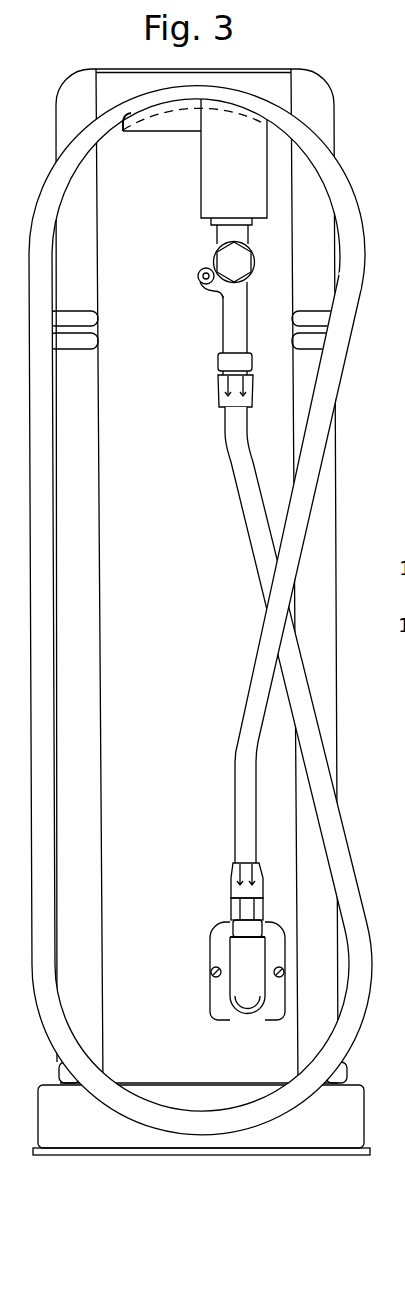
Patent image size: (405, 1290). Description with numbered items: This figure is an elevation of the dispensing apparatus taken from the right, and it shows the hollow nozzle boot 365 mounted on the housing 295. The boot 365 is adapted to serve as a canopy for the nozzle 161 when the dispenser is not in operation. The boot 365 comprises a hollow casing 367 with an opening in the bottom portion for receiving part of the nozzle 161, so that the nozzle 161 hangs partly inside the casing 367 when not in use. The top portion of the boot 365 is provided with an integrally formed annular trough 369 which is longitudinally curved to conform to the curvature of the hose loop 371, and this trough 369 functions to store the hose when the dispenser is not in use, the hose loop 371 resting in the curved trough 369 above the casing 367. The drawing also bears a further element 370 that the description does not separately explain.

The swivel nut fitting 161 is at (220, 241).
The dispenser cabinet 295 is at (334, 690).
The hose retractor housing 365 is at (206, 160).
The outlet fitting 367 is at (210, 209).
The clip 369 is at (150, 123).
The hose guide 370 is at (223, 110).
The hose 371 is at (343, 198).